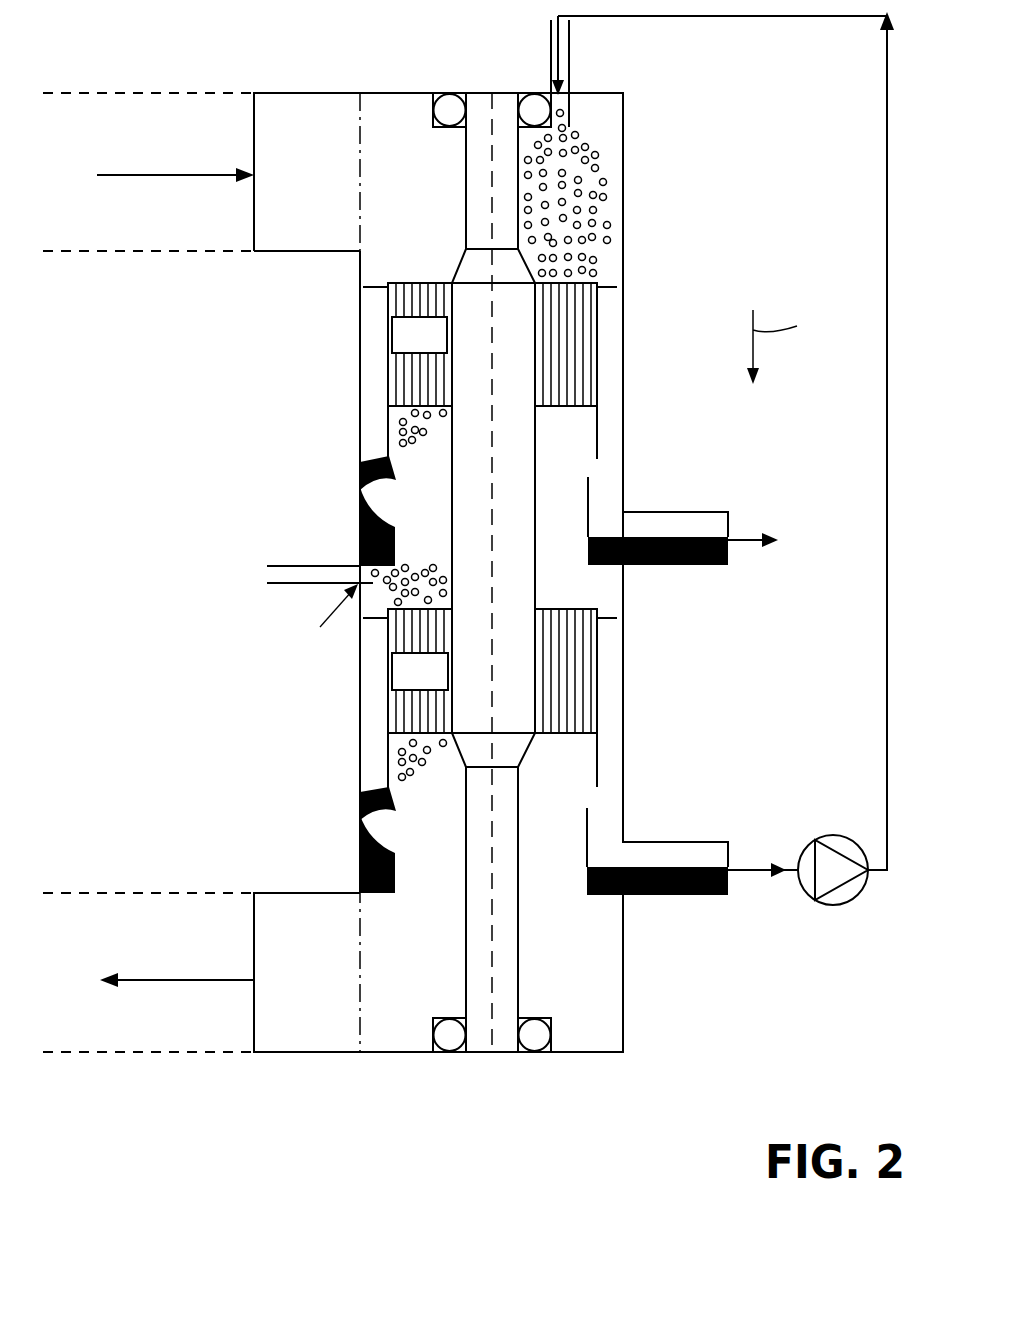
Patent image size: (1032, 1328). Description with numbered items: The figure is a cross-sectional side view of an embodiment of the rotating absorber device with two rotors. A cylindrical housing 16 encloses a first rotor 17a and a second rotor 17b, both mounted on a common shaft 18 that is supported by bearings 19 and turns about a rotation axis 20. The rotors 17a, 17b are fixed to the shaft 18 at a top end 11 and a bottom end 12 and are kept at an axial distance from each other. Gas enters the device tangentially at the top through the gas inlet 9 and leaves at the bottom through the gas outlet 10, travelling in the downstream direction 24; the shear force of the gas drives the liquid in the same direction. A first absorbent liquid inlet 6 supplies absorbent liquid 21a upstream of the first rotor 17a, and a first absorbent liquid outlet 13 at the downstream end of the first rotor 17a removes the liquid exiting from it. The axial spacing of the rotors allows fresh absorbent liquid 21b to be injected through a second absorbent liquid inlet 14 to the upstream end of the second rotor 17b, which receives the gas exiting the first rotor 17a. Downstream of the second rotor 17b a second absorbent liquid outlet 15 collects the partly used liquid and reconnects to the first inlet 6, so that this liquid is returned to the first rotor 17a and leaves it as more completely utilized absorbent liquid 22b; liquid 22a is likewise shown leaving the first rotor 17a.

The first absorbent liquid inlet 6 is at (575, 98).
The gas inlet 9 is at (148, 172).
The gas outlet 10 is at (148, 972).
The top end 11 is at (419, 335).
The bottom end 12 is at (420, 672).
The first absorbent liquid outlet 13 is at (685, 532).
The second absorbent liquid inlet 14 is at (298, 596).
The second absorbent liquid outlet 15 is at (726, 458).
The cylindrical housing 16 is at (360, 349).
The first rotor 17a is at (597, 334).
The second rotor 17b is at (597, 664).
The shaft 18 is at (482, 107).
The bearings 19 is at (448, 110).
The rotation axis 20 is at (492, 962).
The absorbent liquid 21a is at (603, 165).
The absorbent liquid 21b is at (415, 575).
The gas bubbles after first stage 22a is at (422, 432).
The utilized absorbent liquid 22b is at (423, 762).
The downstream direction 24 is at (794, 347).